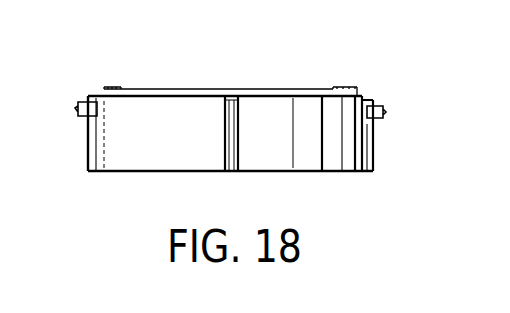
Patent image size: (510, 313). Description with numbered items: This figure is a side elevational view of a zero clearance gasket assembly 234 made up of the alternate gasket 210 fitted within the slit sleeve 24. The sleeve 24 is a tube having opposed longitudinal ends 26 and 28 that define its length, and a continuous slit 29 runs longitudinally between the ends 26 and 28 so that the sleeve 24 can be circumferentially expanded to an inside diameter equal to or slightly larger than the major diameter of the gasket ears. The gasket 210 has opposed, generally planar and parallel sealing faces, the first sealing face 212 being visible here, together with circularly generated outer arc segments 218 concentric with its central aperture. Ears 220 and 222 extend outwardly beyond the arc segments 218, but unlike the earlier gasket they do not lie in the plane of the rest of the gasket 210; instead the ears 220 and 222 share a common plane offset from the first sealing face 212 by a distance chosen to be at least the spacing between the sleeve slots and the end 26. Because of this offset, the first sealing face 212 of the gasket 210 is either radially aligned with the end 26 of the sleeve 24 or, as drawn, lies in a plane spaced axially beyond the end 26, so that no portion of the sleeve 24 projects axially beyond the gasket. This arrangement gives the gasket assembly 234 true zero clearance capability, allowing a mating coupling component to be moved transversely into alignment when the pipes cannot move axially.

The sleeve 24 is at (84, 161).
The longitudinal end 26 is at (89, 100).
The longitudinal end 28 is at (88, 172).
The slit 29 is at (236, 160).
The gasket 210 is at (312, 83).
The first sealing face 212 is at (139, 92).
The outer arc segments 218 is at (238, 92).
The ear 220 is at (78, 114).
The ear 222 is at (384, 114).
The gasket assembly 234 is at (294, 76).